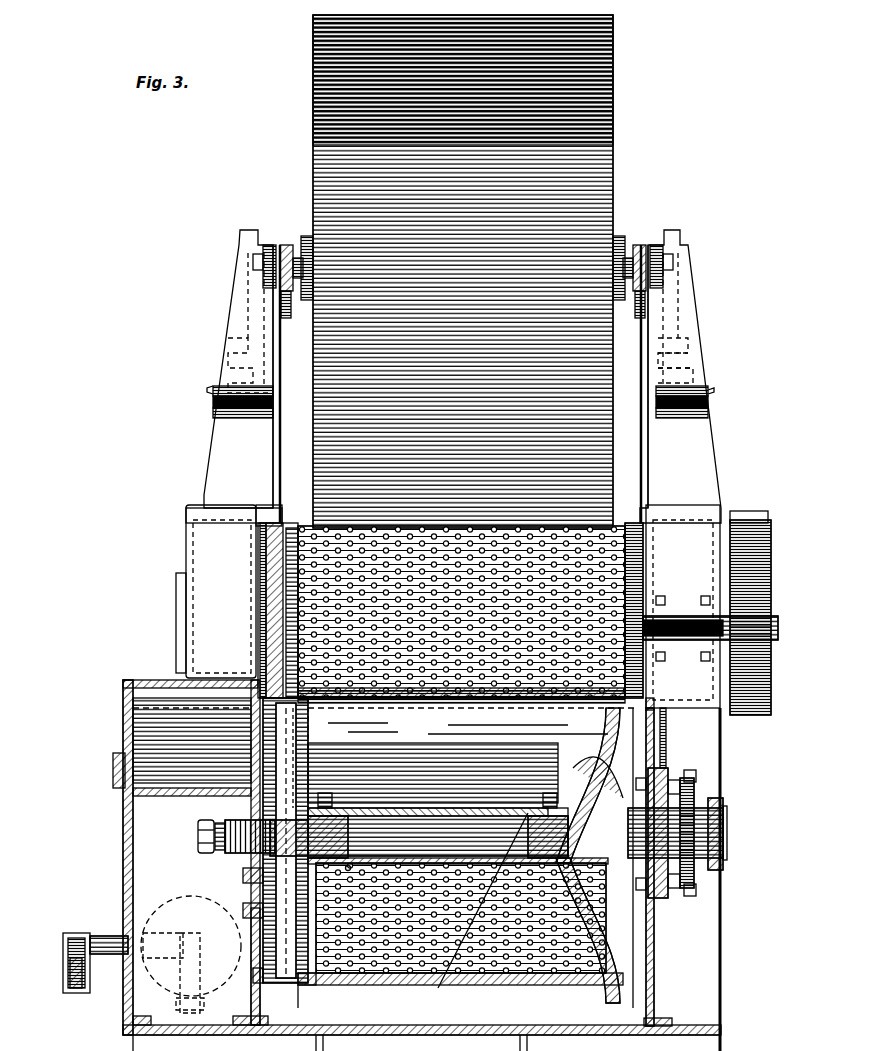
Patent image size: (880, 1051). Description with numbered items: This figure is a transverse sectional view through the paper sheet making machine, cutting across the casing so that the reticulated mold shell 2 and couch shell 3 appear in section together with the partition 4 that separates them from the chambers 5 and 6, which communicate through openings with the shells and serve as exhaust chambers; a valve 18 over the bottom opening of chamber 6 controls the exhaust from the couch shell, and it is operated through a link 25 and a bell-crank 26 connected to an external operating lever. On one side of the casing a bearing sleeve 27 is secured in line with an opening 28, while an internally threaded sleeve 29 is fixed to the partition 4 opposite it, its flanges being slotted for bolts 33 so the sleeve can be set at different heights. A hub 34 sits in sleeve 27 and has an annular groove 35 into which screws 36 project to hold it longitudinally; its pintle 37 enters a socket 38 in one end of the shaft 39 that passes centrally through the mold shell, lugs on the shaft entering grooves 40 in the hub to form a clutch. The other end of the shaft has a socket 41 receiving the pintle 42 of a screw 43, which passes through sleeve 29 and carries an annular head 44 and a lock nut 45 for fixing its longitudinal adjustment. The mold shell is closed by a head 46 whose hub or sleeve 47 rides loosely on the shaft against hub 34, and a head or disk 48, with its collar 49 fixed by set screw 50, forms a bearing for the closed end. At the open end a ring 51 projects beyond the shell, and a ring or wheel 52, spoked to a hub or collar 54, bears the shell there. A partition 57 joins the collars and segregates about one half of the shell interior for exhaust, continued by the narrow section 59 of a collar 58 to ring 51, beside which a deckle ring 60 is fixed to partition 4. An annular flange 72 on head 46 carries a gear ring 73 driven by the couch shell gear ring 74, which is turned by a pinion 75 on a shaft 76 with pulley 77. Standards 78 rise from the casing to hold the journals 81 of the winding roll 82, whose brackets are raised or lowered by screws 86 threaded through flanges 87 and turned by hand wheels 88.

The mold shell 2 is at (505, 977).
The couch shell 3 is at (606, 518).
The partition 4 is at (243, 993).
The chamber 5 is at (417, 865).
The chamber 6 is at (229, 591).
The valve 18 is at (172, 1005).
The link 25 is at (191, 946).
The bell-crank 26 is at (109, 957).
The bearing sleeve 27 is at (58, 964).
The opening 28 is at (650, 762).
The internally threaded sleeve 29 is at (234, 815).
The bolts 33 is at (672, 775).
The hub 34 is at (716, 842).
The annular groove 35 is at (716, 815).
The screws 36 is at (690, 900).
The pintle 37 is at (620, 870).
The socket 38 is at (414, 837).
The shaft 39 is at (376, 818).
The grooves 40 is at (666, 882).
The socket 41 is at (279, 236).
The pintle 42 is at (280, 800).
The screw 43 is at (190, 830).
The annular head 44 is at (205, 812).
The lock nut 45 is at (215, 843).
The head 46 is at (648, 728).
The hub or sleeve 47 is at (588, 930).
The head or disk 48 is at (580, 760).
The collar 49 is at (482, 912).
The set screw 50 is at (540, 785).
The ring 51 is at (302, 1002).
The ring or wheel 52 is at (300, 978).
The hub or collar 54 is at (359, 869).
The partition 57 is at (473, 755).
The collar 58 is at (284, 840).
The narrow section 59 is at (300, 720).
The deckle ring 60 is at (256, 976).
The annular flange 72 is at (648, 710).
The gear wheel or ring 73 is at (646, 696).
The gear wheel or ring 74 is at (636, 555).
The pinion 75 is at (646, 598).
The shaft 76 is at (770, 619).
The pulley 77 is at (764, 575).
The standards 78 is at (477, 376).
The journals 81 is at (289, 295).
The winding roll 82 is at (605, 150).
The screw 86 is at (690, 342).
The flange 87 is at (693, 358).
The hand wheel 88 is at (200, 381).